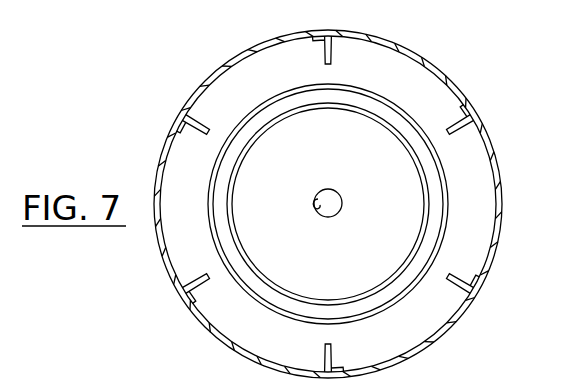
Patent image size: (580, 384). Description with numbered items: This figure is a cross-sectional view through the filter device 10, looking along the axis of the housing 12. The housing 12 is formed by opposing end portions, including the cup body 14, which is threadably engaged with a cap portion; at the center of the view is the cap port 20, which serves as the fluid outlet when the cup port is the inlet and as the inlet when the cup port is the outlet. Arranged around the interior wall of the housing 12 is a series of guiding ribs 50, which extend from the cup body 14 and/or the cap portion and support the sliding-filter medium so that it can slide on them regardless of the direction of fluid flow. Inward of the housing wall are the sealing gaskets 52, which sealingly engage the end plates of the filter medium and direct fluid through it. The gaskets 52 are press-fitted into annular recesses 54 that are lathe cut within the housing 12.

The filter device 10 is at (112, 129).
The housing 12 is at (374, 29).
The cup body 14 is at (505, 174).
The cap port 20 is at (313, 200).
The guiding ribs 50 is at (324, 353).
The sealing gaskets 52 is at (440, 165).
The annular recesses 54 is at (405, 288).